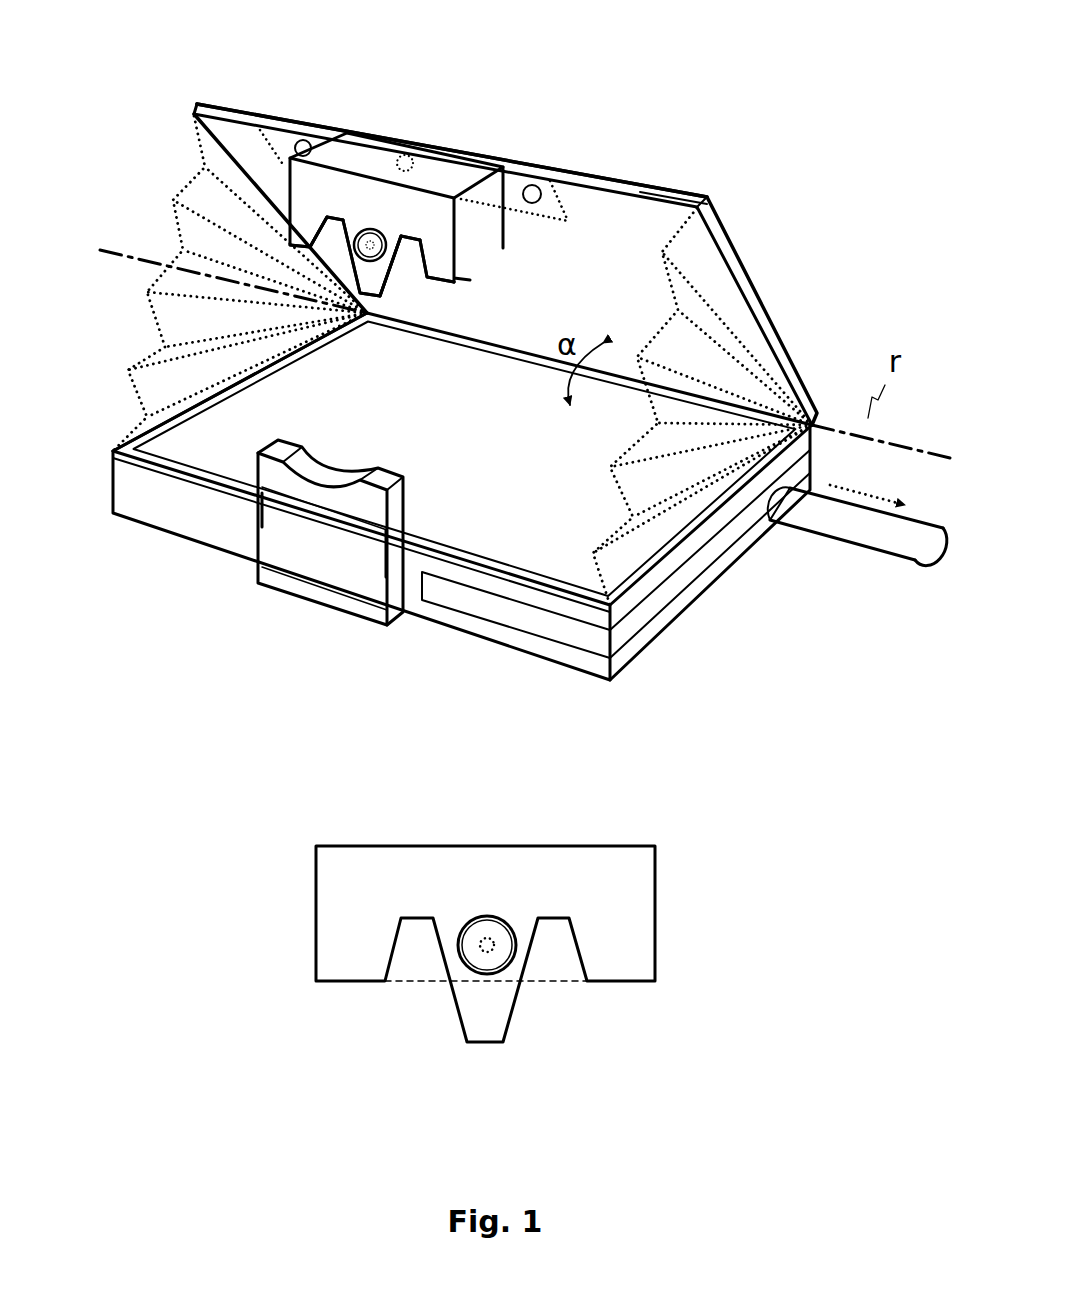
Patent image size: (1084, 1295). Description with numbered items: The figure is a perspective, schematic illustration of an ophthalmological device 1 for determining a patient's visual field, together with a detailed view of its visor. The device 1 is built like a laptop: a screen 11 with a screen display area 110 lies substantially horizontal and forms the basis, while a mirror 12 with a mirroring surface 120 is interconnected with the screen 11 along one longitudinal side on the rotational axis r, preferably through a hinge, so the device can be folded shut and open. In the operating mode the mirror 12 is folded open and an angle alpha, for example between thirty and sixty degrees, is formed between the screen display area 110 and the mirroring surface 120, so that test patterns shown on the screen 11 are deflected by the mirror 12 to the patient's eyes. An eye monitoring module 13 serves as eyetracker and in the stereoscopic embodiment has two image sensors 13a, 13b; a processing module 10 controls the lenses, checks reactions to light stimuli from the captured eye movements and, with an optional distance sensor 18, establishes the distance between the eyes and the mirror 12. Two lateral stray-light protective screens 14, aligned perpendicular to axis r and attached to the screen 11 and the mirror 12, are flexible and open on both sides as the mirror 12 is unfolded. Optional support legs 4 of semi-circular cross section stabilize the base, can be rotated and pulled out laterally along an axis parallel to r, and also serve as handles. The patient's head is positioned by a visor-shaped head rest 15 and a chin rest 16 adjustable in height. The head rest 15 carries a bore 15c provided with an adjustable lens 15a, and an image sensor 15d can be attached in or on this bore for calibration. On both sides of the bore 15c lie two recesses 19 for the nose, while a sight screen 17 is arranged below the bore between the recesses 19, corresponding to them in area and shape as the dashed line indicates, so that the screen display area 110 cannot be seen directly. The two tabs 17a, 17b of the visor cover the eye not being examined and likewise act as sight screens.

The ophthalmological device 1 is at (200, 665).
The support legs 4 is at (890, 537).
The processing module 10 is at (687, 573).
The screen 11 is at (197, 480).
The screen display area 110 is at (187, 443).
The mirror 12 is at (653, 220).
The mirroring surface 120 is at (660, 212).
The eye monitoring module 13 is at (640, 192).
The image sensor 13a is at (540, 186).
The image sensor 13b is at (303, 140).
The stray-light protective screens 14 is at (705, 260).
The head rest 15 is at (357, 174).
The adjustable lens 15a is at (368, 238).
The bore 15c is at (464, 915).
The image sensor 15d is at (385, 250).
The chin rest 16 is at (348, 590).
The sight screen 17 is at (382, 293).
The tab 17a is at (440, 255).
The tab 17b is at (305, 226).
The distance sensor 18 is at (408, 160).
The recesses 19 is at (329, 210).